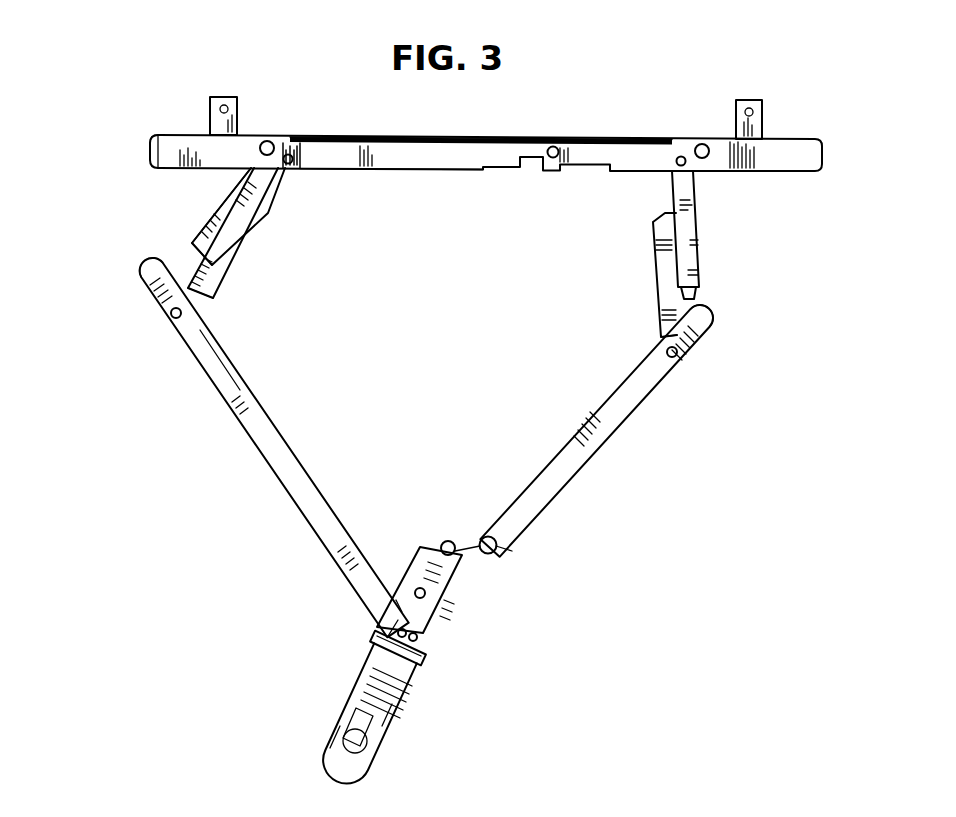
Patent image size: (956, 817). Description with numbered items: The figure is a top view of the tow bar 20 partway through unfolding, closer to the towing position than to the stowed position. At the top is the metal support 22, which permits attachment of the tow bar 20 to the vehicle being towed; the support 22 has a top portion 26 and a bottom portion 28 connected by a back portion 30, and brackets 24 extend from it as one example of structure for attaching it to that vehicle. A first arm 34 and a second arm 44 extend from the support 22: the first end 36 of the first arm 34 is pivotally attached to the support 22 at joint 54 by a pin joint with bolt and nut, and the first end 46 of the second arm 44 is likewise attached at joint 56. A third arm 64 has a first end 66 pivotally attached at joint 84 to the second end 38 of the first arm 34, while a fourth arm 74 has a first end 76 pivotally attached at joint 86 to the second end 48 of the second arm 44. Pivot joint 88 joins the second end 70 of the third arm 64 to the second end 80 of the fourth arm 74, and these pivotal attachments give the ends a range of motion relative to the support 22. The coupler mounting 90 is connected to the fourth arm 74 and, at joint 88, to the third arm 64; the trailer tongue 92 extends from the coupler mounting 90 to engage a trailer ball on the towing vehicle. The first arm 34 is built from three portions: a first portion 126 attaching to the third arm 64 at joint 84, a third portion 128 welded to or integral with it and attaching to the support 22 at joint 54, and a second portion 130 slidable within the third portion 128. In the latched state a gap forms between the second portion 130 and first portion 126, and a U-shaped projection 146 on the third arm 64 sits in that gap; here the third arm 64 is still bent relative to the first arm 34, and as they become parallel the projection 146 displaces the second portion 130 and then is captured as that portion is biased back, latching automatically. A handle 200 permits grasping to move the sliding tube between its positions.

The tow bar 20 is at (759, 394).
The support 22 is at (510, 135).
The brackets 24 is at (508, 97).
The top portion 26 is at (119, 173).
The bottom portion 28 is at (391, 196).
The back portion 30 is at (481, 114).
The first arm 34 is at (242, 236).
The first end of first arm 36 is at (324, 181).
The second end of first arm 38 is at (225, 315).
The second arm 44 is at (636, 275).
The first end of second arm 46 is at (718, 235).
The second end of second arm 48 is at (628, 343).
The joint 54 is at (296, 126).
The joint 56 is at (629, 127).
The third arm 64 is at (274, 447).
The first end of third arm 66 is at (197, 384).
The second end of third arm 70 is at (341, 617).
The fourth arm 74 is at (596, 431).
The first end of fourth arm 76 is at (731, 335).
The second end of fourth arm 80 is at (450, 591).
The joint 84 is at (128, 328).
The joint 86 is at (683, 390).
The pivot joint 88 is at (386, 556).
The coupler mounting 90 is at (431, 656).
The trailer tongue 92 is at (384, 714).
The first portion 126 is at (260, 218).
The third portion 128 is at (193, 205).
The second portion 130 is at (163, 240).
The projection 146 is at (100, 270).
The handle 200 is at (519, 569).